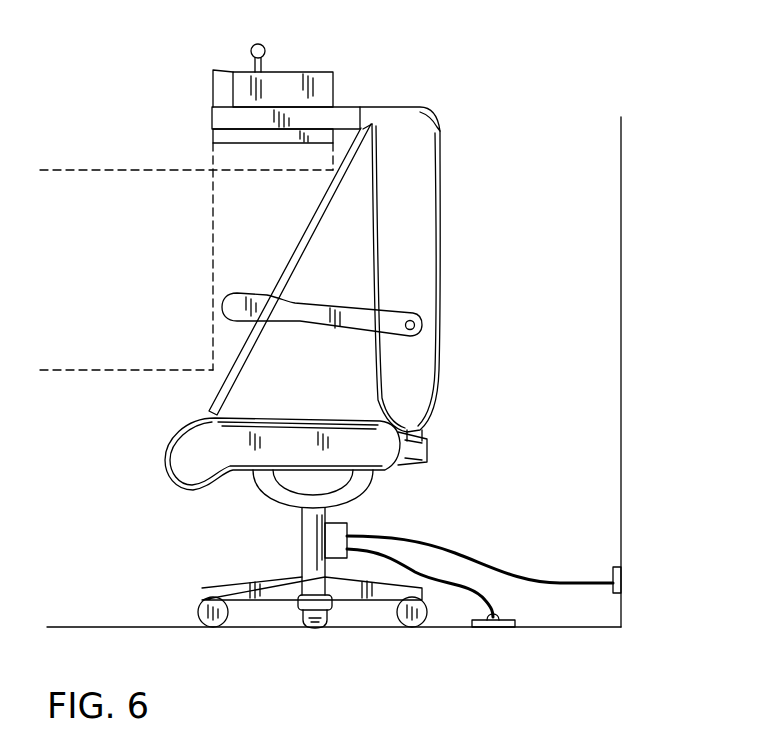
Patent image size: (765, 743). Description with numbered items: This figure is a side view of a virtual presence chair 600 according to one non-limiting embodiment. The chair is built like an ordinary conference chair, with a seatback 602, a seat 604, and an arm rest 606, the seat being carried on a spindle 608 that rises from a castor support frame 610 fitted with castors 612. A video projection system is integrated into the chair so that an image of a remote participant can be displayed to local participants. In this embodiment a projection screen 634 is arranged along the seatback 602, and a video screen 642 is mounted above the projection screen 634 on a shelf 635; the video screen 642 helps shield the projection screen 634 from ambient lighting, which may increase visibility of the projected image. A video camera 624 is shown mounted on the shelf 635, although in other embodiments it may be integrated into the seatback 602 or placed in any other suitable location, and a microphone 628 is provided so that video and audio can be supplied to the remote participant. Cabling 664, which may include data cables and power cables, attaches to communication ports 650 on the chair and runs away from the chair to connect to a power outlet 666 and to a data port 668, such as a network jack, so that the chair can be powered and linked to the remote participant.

The virtual presence chair 600 is at (485, 80).
The seatback 602 is at (430, 222).
The seat 604 is at (167, 463).
The arm rest 606 is at (335, 318).
The spindle 608 is at (302, 521).
The castor support frame 610 is at (230, 583).
The castors 612 is at (197, 613).
The video camera 624 is at (212, 93).
The microphone 628 is at (266, 52).
The projection screen 634 is at (298, 228).
The shelf 635 is at (212, 122).
The video screen 642 is at (246, 141).
The communication ports 650 is at (353, 520).
The cabling 664 is at (484, 543).
The power outlet 666 is at (516, 641).
The data port 668 is at (626, 577).